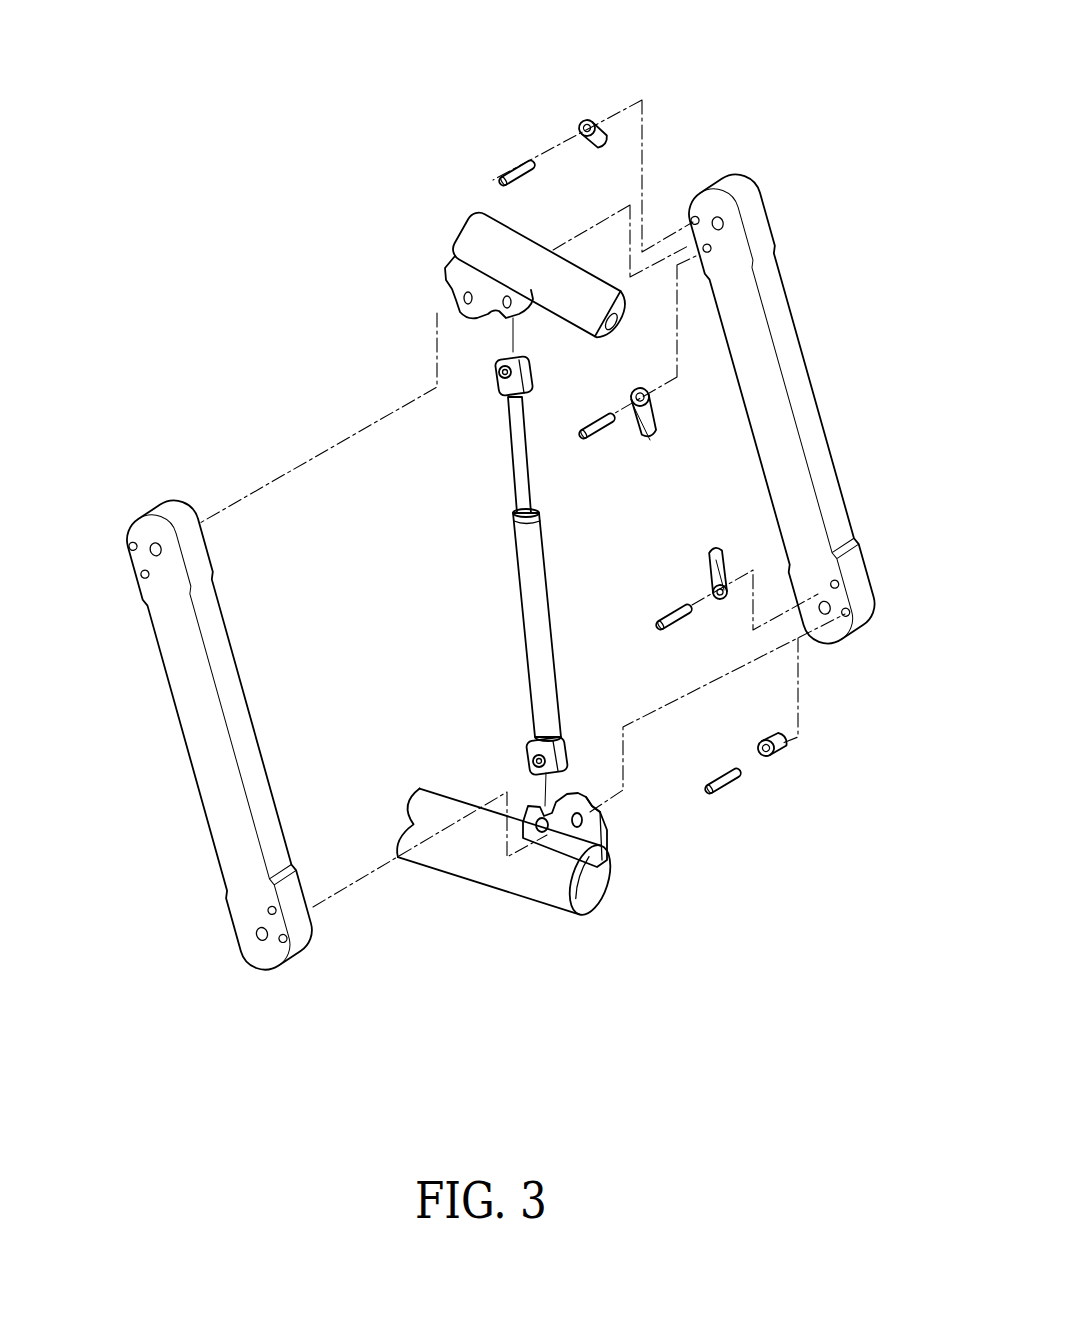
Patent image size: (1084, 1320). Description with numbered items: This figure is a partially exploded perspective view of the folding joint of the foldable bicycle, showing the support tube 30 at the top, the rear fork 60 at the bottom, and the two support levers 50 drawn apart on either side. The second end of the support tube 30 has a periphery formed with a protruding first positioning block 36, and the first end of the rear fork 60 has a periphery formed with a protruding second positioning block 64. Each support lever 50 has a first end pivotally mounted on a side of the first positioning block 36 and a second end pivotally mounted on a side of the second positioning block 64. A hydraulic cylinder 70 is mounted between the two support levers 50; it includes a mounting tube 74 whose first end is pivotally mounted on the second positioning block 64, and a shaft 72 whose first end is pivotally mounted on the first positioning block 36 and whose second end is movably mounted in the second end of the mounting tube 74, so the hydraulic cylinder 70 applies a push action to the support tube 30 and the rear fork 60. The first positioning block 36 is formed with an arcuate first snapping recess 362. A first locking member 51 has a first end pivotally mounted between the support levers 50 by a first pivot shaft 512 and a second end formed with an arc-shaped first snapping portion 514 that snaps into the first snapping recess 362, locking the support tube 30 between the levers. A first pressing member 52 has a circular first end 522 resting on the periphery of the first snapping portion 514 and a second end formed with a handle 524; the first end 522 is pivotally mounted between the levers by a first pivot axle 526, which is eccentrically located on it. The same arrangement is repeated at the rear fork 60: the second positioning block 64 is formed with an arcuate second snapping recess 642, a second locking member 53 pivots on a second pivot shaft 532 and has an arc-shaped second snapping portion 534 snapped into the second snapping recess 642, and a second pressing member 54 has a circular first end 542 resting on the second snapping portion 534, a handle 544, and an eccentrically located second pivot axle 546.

The support tube 30 is at (443, 213).
The first positioning block 36 is at (396, 263).
The first snapping recess 362 is at (455, 304).
The support levers 50 is at (800, 382).
The first locking member 51 is at (516, 114).
The first pivot shaft 512 is at (518, 168).
The first snapping portion 514 is at (593, 147).
The first pressing member 52 is at (641, 426).
The first end 522 is at (631, 393).
The handle 524 is at (648, 442).
The first pivot axle 526 is at (595, 440).
The second locking member 53 is at (766, 791).
The second pivot shaft 532 is at (732, 778).
The second snapping portion 534 is at (757, 733).
The second pressing member 54 is at (730, 553).
The first end 542 is at (720, 603).
The handle 544 is at (710, 553).
The second pivot axle 546 is at (667, 612).
The rear fork 60 is at (522, 907).
The second positioning block 64 is at (619, 899).
The second snapping recess 642 is at (593, 810).
The hydraulic cylinder 70 is at (454, 581).
The shaft 72 is at (517, 448).
The mounting tube 74 is at (538, 682).